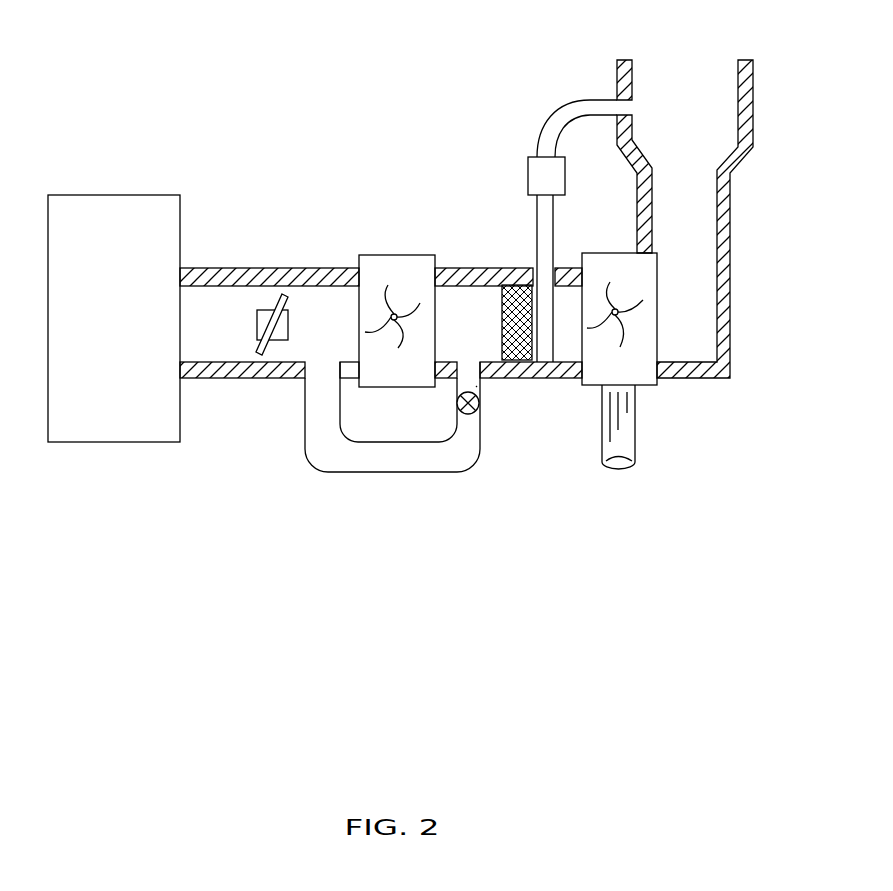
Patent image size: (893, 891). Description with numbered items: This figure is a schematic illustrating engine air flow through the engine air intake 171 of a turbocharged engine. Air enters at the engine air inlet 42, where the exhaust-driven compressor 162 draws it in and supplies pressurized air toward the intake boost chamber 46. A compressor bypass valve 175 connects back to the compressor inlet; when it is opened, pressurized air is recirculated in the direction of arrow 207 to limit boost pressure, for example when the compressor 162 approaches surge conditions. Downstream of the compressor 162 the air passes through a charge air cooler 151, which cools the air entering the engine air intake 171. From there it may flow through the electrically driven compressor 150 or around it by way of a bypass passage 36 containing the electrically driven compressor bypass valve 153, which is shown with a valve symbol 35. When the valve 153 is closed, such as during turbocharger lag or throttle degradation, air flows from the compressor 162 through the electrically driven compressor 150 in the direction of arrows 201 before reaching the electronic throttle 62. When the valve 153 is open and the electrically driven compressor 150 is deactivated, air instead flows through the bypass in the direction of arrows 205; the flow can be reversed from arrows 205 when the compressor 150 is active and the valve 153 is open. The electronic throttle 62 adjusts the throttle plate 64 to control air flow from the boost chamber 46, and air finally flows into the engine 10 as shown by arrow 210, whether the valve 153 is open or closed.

The engine 10 is at (87, 195).
The valve 35 is at (477, 387).
The bypass conduit 36 is at (340, 472).
The engine air inlet 42 is at (704, 74).
The intake boost chamber 46 is at (300, 298).
The electronic throttle 62 is at (266, 310).
The throttle plate 64 is at (285, 296).
The electrically driven compressor 150 is at (418, 255).
The charge air cooler 151 is at (492, 300).
The electrically driven compressor bypass valve 153 is at (457, 412).
The compressor 162 is at (632, 253).
The engine air intake 171 is at (562, 490).
The compressor bypass valve 175 is at (524, 155).
The arrows 201 is at (342, 312).
The arrows 205 is at (322, 433).
The arrow 207 is at (579, 107).
The arrow 210 is at (230, 323).